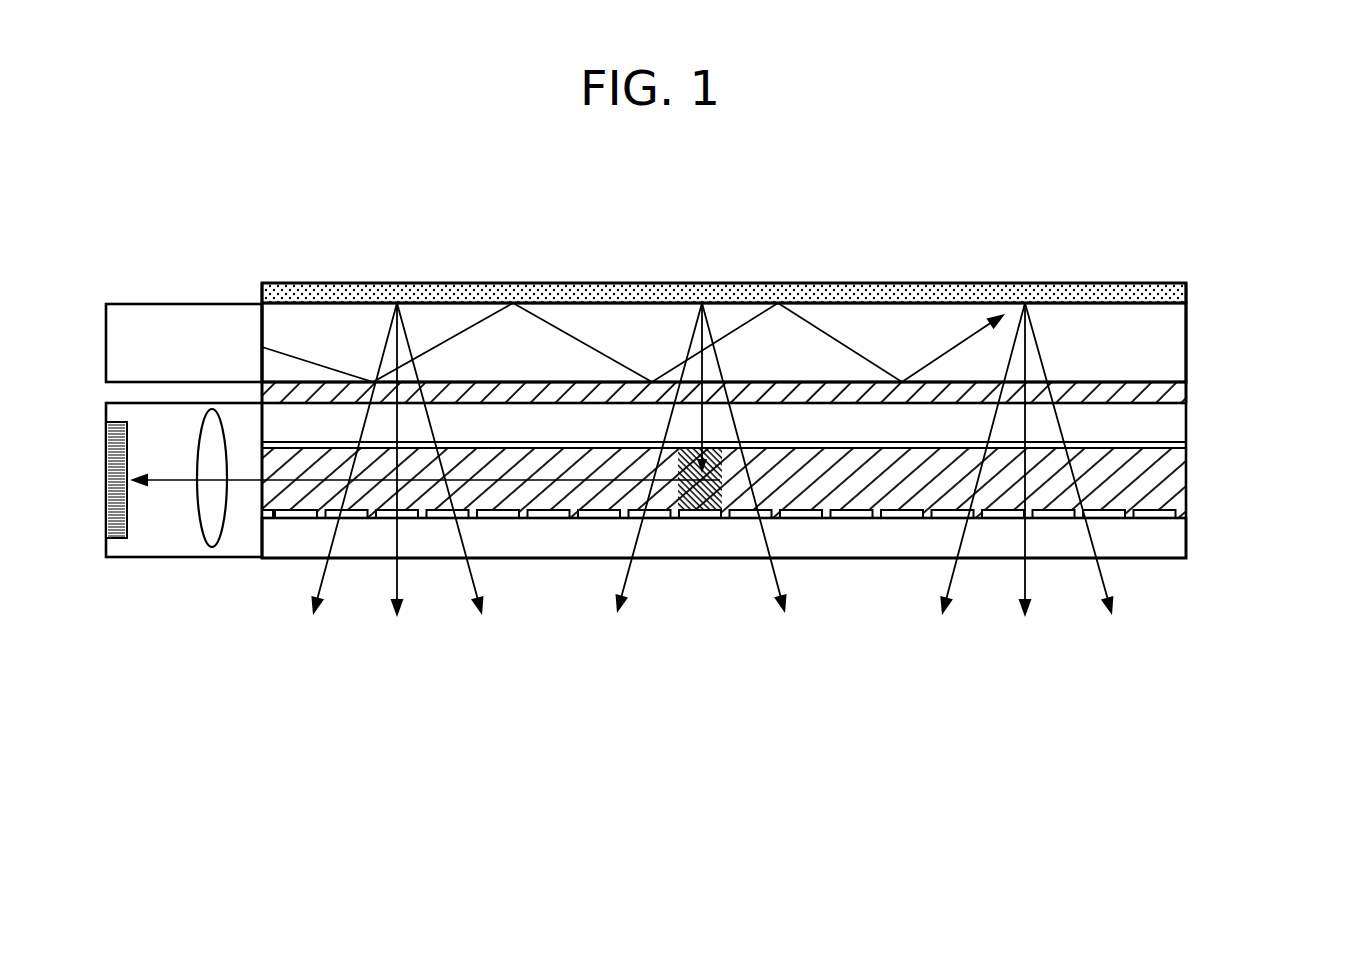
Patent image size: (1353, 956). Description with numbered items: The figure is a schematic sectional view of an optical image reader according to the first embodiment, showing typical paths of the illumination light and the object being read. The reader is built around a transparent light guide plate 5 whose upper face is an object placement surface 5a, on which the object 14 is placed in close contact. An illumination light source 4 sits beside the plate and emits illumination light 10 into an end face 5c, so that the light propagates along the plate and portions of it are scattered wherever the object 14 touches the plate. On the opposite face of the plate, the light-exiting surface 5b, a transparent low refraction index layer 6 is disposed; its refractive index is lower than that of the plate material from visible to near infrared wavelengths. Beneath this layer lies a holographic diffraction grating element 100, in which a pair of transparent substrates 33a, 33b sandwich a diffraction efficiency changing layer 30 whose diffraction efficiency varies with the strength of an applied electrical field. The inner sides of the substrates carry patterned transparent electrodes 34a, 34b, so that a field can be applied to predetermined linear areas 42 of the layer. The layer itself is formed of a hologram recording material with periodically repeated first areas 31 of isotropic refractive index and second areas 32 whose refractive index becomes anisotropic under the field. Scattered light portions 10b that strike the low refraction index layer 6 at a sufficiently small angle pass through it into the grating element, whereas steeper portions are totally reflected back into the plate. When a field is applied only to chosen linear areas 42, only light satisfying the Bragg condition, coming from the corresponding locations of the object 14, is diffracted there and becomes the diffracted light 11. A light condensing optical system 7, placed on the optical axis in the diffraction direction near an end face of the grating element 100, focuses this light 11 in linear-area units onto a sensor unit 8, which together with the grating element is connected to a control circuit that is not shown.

The illumination light source 4 is at (122, 343).
The transparent light guide plate 5 is at (1168, 347).
The object placement surface 5a is at (1070, 300).
The light-exiting surface 5b is at (1128, 388).
The end face 5c is at (260, 322).
The transparent low refraction index layer 6 is at (1160, 392).
The light condensing optical system 7 is at (212, 535).
The sensor unit 8 is at (110, 478).
The illumination light 10 is at (298, 357).
The light portions 10b is at (735, 372).
The light 11 is at (163, 480).
The object 14 is at (920, 297).
The diffraction efficiency changing layer 30 is at (758, 559).
The first areas 31 is at (800, 480).
The second areas 32 is at (413, 487).
The transparent substrate 33a is at (870, 422).
The transparent substrate 33b is at (582, 535).
The transparent electrode 34a is at (922, 445).
The transparent electrode 34b is at (500, 513).
The linear areas 42 is at (708, 525).
The holographic diffraction grating element 100 is at (1257, 403).